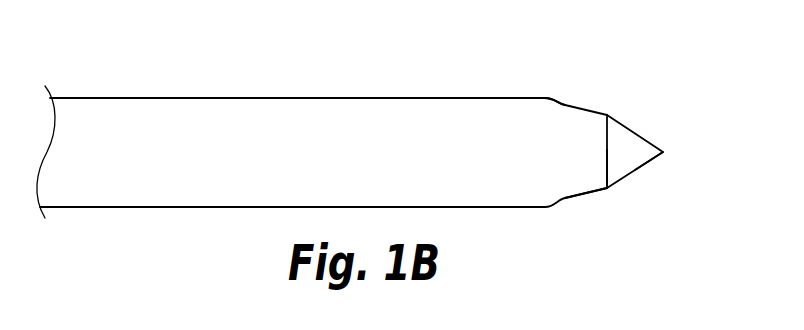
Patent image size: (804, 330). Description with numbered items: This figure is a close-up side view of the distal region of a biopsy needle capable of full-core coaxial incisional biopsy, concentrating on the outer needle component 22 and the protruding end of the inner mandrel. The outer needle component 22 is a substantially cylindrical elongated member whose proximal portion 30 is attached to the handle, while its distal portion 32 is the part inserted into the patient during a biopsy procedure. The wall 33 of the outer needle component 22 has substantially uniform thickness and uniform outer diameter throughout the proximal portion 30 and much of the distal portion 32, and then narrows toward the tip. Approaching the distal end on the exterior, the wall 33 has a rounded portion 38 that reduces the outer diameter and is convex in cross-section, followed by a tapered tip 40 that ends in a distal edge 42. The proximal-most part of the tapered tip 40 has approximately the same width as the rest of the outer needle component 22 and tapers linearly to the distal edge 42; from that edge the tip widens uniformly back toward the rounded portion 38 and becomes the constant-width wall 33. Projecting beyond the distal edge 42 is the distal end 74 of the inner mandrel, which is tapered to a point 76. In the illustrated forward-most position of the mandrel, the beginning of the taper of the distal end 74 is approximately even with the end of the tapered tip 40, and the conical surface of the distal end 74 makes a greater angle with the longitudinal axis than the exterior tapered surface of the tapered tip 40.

The proximal portion 30 is at (125, 93).
The outer needle component 22 is at (362, 127).
The wall 33 is at (487, 208).
The distal portion 32 is at (558, 82).
The rounded portion 38 is at (562, 100).
The tapered tip 40 is at (595, 197).
The distal edge 42 is at (608, 188).
The distal end 74 is at (650, 132).
The point 76 is at (645, 152).